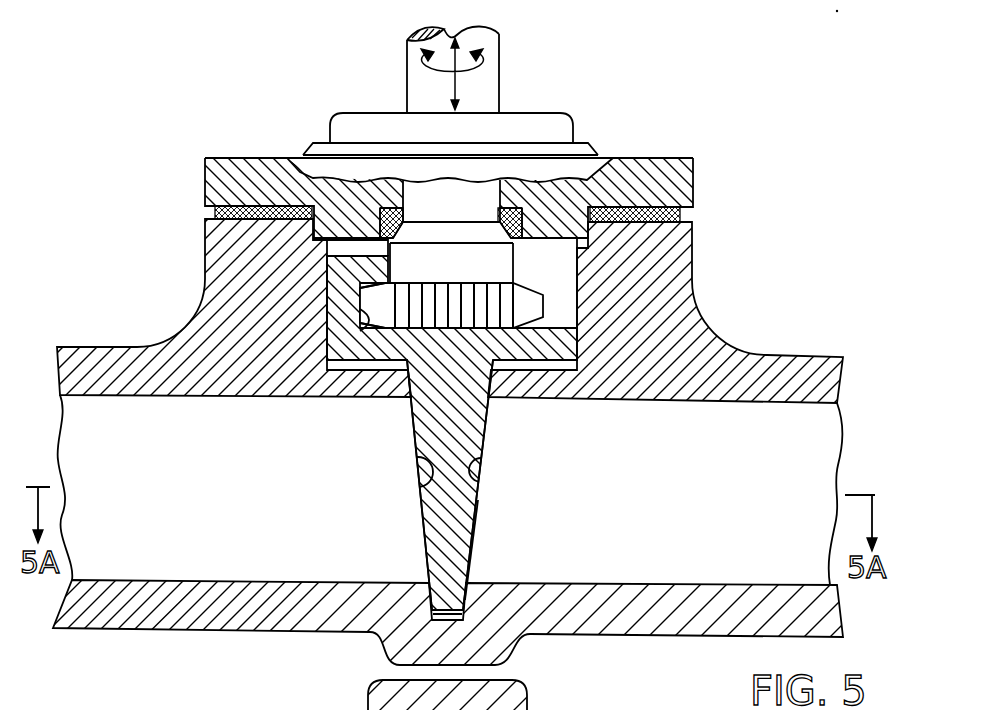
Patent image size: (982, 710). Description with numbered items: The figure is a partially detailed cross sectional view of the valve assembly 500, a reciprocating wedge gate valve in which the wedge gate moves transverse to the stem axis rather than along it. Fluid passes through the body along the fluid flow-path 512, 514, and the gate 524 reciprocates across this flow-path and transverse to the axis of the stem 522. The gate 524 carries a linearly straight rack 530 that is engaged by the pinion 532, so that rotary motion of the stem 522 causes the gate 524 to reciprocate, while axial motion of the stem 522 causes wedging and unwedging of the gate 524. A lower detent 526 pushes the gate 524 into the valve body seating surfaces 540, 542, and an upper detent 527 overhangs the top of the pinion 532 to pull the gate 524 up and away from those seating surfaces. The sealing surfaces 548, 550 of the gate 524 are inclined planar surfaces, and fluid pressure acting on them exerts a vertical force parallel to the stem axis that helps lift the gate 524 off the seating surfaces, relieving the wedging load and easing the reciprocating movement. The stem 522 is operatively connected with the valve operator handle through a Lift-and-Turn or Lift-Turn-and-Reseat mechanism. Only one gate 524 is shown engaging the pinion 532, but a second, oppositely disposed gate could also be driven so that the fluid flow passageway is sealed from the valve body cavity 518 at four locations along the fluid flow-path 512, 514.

The valve assembly 500 is at (752, 181).
The fluid flow-path 512 is at (805, 504).
The fluid flow-path 514 is at (122, 504).
The valve body cavity 518 is at (560, 278).
The stem 522 is at (512, 76).
The gate 524 is at (398, 438).
The lower detent 526 is at (538, 345).
The upper detent 527 is at (365, 262).
The rack 530 is at (368, 318).
The pinion 532 is at (532, 300).
The valve body seating surface 540 is at (480, 488).
The valve body seating surface 542 is at (420, 492).
The inclined planar sealing surface 548 is at (472, 542).
The inclined planar sealing surface 550 is at (427, 556).